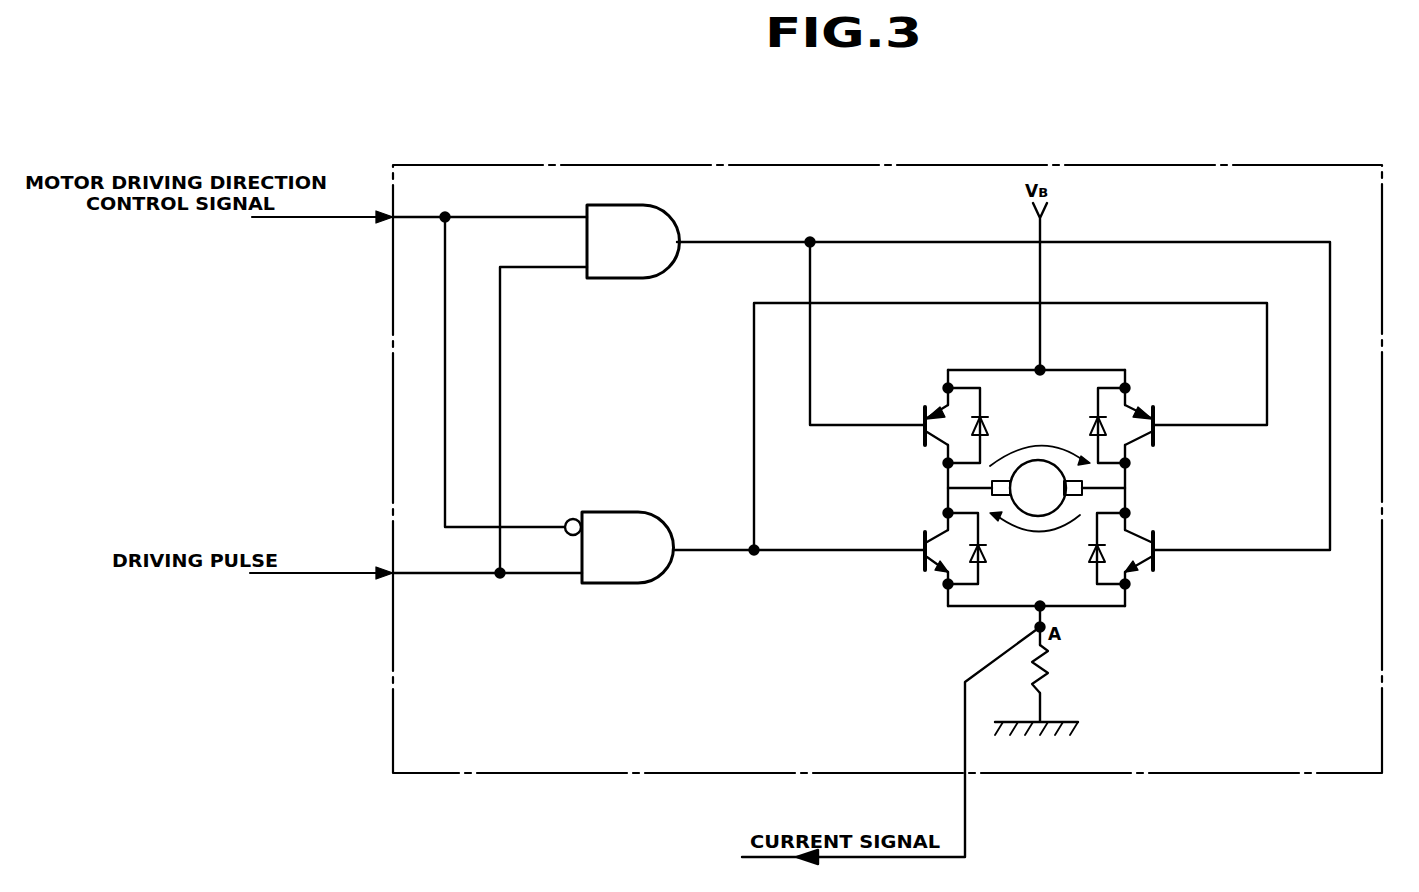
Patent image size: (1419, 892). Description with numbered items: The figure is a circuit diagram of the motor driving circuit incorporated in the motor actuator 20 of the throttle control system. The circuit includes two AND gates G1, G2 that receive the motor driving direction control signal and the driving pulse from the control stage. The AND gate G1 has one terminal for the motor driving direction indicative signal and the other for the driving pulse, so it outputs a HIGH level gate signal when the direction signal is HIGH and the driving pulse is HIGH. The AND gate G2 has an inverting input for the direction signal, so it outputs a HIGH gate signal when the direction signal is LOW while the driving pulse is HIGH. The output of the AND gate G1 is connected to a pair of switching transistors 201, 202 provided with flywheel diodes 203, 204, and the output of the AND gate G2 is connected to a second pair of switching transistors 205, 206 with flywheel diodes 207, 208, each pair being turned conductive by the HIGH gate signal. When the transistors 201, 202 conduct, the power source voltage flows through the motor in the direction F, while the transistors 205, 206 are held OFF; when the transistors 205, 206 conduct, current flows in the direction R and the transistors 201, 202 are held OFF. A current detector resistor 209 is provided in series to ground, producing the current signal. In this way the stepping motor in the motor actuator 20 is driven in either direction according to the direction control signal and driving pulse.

The motor actuator 20 is at (1033, 460).
The switching transistor 201 is at (932, 402).
The switching transistor 202 is at (1138, 403).
The flywheel diode 203 is at (988, 413).
The flywheel diode 204 is at (1093, 415).
The switching transistor 205 is at (935, 568).
The switching transistor 206 is at (1140, 568).
The flywheel diode 207 is at (991, 550).
The flywheel diode 208 is at (1082, 550).
The current detector resistor 209 is at (1050, 680).
The AND gate G1 is at (660, 220).
The AND gate G2 is at (655, 582).